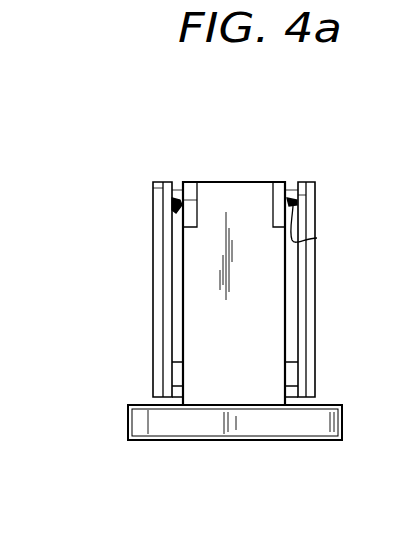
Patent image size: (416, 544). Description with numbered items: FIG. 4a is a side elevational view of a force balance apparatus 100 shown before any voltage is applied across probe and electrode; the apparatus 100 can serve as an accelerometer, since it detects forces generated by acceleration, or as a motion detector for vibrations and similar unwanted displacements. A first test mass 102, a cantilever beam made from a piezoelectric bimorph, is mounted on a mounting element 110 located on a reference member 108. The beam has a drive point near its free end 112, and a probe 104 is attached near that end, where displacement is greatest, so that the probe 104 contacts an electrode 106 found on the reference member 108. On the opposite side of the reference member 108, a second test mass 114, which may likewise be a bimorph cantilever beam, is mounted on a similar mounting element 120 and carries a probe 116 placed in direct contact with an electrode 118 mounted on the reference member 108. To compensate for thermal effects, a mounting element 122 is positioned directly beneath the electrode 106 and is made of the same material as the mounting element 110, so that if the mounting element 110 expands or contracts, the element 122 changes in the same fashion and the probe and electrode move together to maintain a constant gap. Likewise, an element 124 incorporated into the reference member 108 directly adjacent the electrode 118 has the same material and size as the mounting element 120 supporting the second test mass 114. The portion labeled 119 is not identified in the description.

The force balance apparatus 100 is at (124, 307).
The first test mass 102 is at (306, 278).
The probe 104 is at (317, 238).
The electrode 106 is at (290, 190).
The reference member 108 is at (262, 330).
The mounting element 110 is at (296, 378).
The free end 112 is at (314, 190).
The second test mass 114 is at (153, 268).
The probe 116 is at (173, 211).
The electrode 118 is at (178, 184).
The wall top edge 119 is at (152, 184).
The mounting element 120 is at (176, 386).
The mounting element 122 is at (286, 185).
The element 124 is at (194, 203).